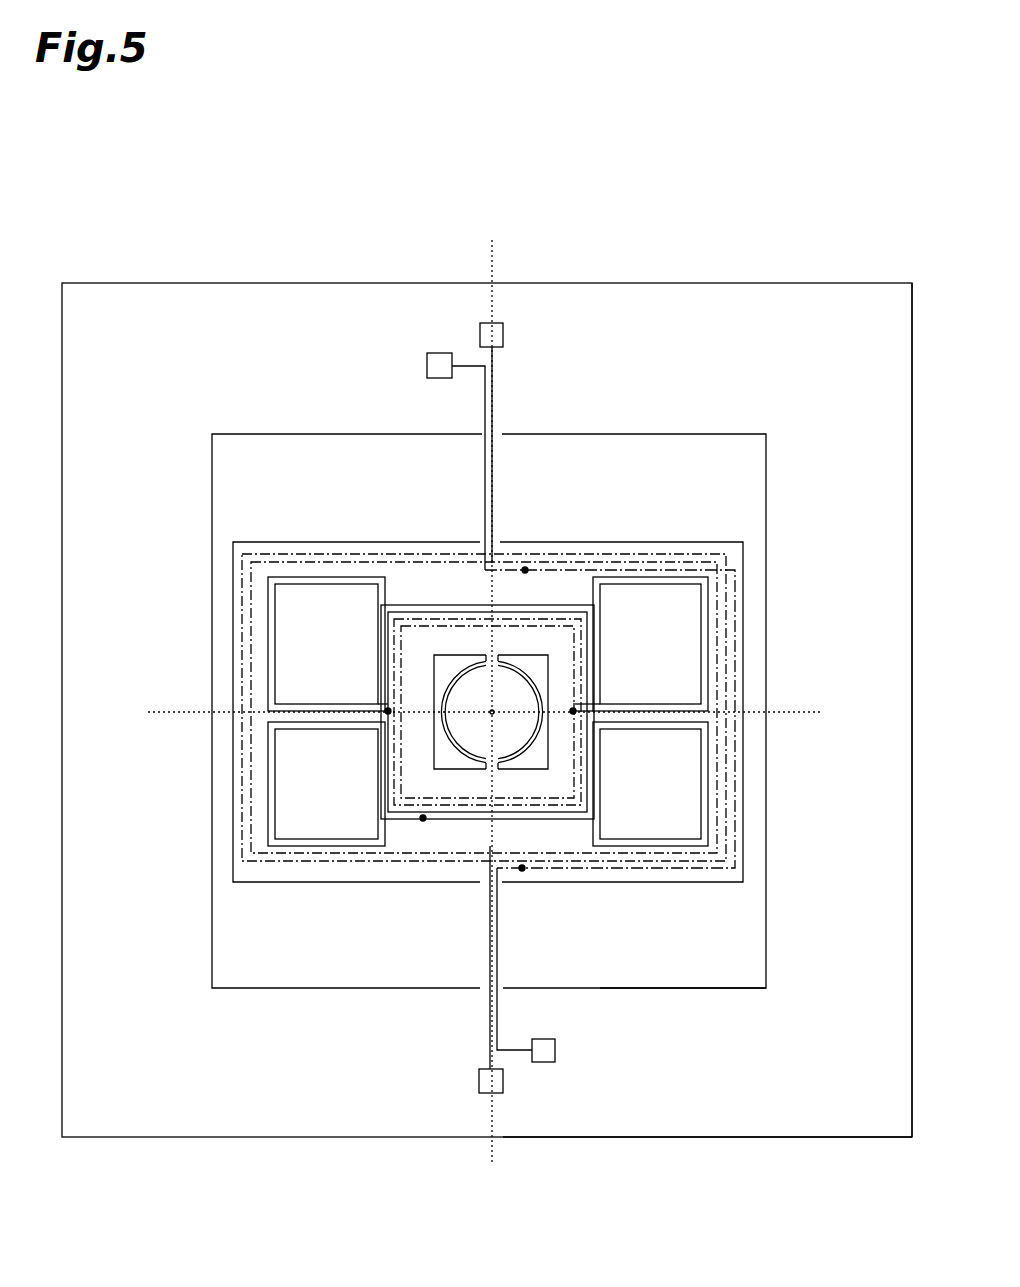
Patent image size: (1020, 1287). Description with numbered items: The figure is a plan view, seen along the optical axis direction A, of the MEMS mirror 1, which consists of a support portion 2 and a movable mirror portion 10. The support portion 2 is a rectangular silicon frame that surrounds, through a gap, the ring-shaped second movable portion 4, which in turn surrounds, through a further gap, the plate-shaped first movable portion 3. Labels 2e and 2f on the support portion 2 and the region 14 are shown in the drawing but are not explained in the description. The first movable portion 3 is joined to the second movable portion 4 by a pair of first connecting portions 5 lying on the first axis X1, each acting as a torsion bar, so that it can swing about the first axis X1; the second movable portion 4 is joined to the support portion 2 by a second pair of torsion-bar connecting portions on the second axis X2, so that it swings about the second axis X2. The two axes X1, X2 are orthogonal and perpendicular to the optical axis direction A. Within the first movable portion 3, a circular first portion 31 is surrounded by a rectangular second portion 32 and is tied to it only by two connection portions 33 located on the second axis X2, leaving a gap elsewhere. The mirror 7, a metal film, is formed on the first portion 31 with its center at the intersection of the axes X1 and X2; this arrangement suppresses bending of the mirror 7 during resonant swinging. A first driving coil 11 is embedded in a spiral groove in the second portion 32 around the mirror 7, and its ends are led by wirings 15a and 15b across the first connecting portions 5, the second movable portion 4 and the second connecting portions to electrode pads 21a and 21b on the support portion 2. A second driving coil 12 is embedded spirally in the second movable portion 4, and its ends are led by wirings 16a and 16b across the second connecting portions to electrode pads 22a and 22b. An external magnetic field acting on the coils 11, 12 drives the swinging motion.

The MEMS mirror 1 is at (760, 202).
The support portion 2 is at (232, 1138).
The side surface of substrate 2e is at (786, 1138).
The edge of substrate 2f is at (728, 987).
The first movable portion 3 is at (378, 771).
The second movable portion 4 is at (313, 884).
The first connecting portion 5 is at (325, 701).
The mirror 7 is at (522, 733).
The movable mirror portion 10 is at (615, 474).
The first driving coil 11 is at (423, 820).
The second driving coil 12 is at (629, 868).
The peripheral region 14 is at (688, 1116).
The wiring 15a is at (253, 635).
The wiring 15b is at (718, 790).
The wiring 16a is at (479, 458).
The wiring 16b is at (540, 957).
The electrode pad 21a is at (494, 321).
The electrode pad 21b is at (494, 1095).
The electrode pad 22a is at (426, 366).
The electrode pad 22b is at (557, 1049).
The first portion 31 is at (528, 677).
The second portion 32 is at (380, 631).
The connection portion 33 is at (489, 660).
The optical axis direction A is at (482, 715).
The first axis X1 is at (818, 712).
The second axis X2 is at (492, 1162).